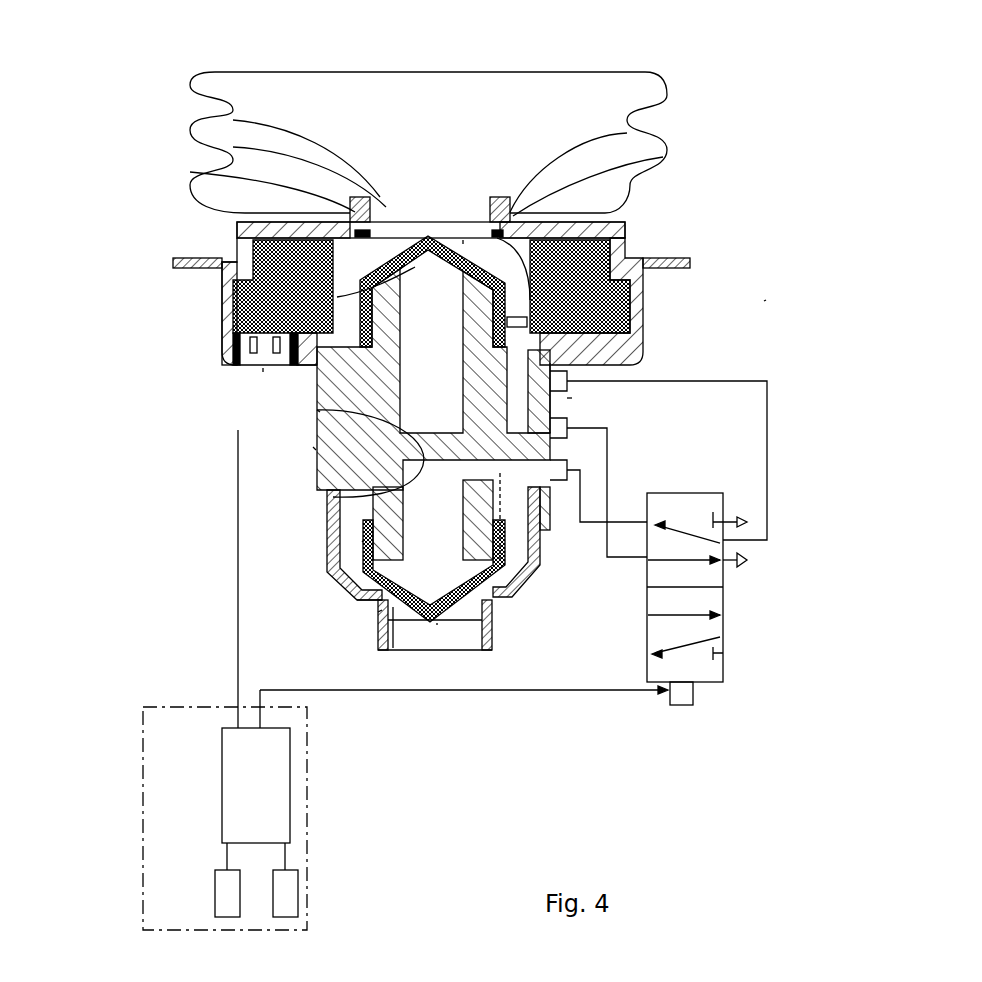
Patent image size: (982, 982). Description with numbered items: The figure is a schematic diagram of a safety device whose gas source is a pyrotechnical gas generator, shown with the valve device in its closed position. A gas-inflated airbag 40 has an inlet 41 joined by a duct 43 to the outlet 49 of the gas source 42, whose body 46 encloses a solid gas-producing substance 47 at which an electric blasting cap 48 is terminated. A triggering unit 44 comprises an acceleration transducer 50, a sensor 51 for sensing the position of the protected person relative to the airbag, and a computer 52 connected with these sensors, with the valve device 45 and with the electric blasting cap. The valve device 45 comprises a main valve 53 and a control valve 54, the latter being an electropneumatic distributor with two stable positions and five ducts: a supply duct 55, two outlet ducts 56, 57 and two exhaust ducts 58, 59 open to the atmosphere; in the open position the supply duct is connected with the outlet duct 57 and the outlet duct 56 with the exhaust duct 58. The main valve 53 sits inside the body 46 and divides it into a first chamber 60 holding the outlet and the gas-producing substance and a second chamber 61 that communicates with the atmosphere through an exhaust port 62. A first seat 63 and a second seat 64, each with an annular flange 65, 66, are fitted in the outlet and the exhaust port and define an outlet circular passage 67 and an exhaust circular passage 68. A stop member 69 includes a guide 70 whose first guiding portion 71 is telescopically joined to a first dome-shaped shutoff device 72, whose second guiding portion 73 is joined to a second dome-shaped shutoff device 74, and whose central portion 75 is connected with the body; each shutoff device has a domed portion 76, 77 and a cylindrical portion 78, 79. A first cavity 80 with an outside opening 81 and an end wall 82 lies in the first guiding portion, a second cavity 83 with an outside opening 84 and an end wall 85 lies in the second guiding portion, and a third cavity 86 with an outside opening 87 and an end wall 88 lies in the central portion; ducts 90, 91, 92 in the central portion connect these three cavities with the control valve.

The gas-inflated airbag 40 is at (571, 56).
The inlet 41 is at (233, 120).
The gas source 42 is at (652, 250).
The duct 43 is at (233, 147).
The triggering unit 44 is at (133, 711).
The valve device 45 is at (764, 301).
The body 46 is at (238, 258).
The solid gas-producing substance 47 is at (632, 307).
The electric blasting cap 48 is at (240, 328).
The outlet 49 is at (375, 208).
The acceleration transducer 50 is at (293, 917).
The sensor 51 is at (227, 917).
The computer 52 is at (290, 793).
The main valve 53 is at (254, 474).
The control valve 54 is at (764, 566).
The supply duct 55 is at (750, 540).
The outlet duct 56 is at (640, 560).
The outlet duct 57 is at (622, 522).
The exhaust duct 58 is at (728, 562).
The exhaust duct 59 is at (725, 520).
The first chamber 60 is at (495, 250).
The second chamber 61 is at (327, 530).
The exhaust port 62 is at (393, 648).
The first seat 63 is at (627, 133).
The second seat 64 is at (380, 612).
The annular flange 65 is at (190, 172).
The annular flange 66 is at (362, 597).
The outlet circular passage 67 is at (405, 232).
The exhaust circular passage 68 is at (378, 647).
The stop member 69 is at (463, 246).
The guide 70 is at (316, 450).
The first guiding portion 71 is at (625, 332).
The first movable dome-shaped shutoff device 72 is at (428, 238).
The second guiding portion 73 is at (518, 562).
The second movable dome-shaped shutoff device 74 is at (437, 623).
The central portion 75 is at (263, 430).
The domed portion 76 is at (663, 157).
The domed portion 77 is at (455, 622).
The cylindrical portion 78 is at (505, 250).
The cylindrical portion 79 is at (362, 542).
The first cavity 80 is at (442, 358).
The outside opening 81 is at (337, 297).
The end wall 82 is at (317, 410).
The second cavity 83 is at (445, 518).
The outside opening 84 is at (493, 607).
The end wall 85 is at (333, 497).
The third cavity 86 is at (658, 444).
The outside opening 87 is at (555, 366).
The end wall 88 is at (567, 427).
The duct 90 is at (608, 452).
The duct 91 is at (505, 540).
The duct 92 is at (567, 403).